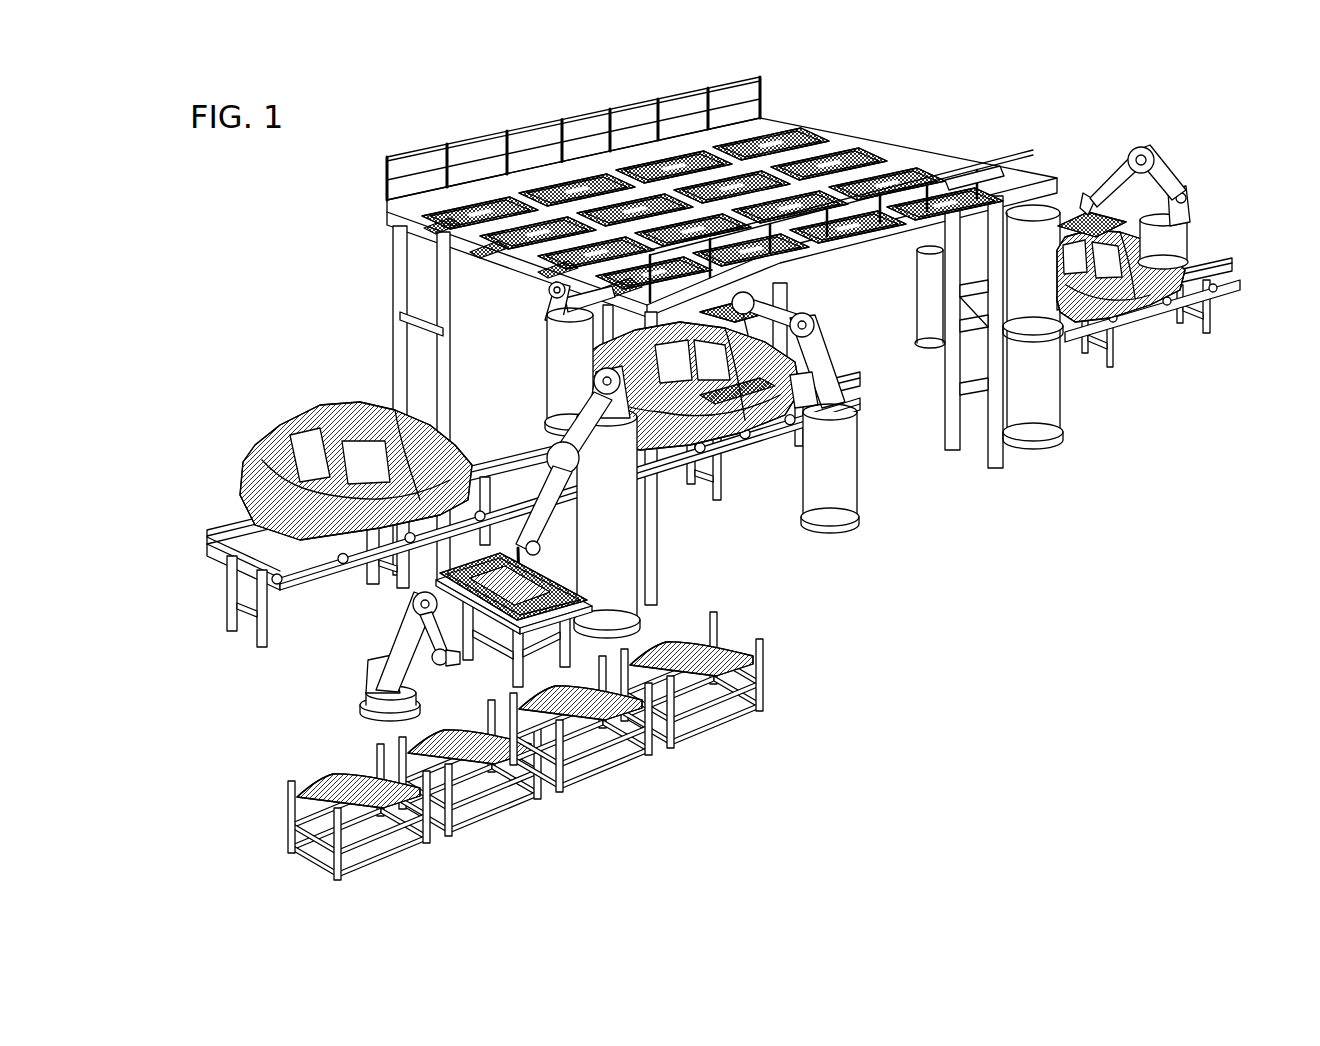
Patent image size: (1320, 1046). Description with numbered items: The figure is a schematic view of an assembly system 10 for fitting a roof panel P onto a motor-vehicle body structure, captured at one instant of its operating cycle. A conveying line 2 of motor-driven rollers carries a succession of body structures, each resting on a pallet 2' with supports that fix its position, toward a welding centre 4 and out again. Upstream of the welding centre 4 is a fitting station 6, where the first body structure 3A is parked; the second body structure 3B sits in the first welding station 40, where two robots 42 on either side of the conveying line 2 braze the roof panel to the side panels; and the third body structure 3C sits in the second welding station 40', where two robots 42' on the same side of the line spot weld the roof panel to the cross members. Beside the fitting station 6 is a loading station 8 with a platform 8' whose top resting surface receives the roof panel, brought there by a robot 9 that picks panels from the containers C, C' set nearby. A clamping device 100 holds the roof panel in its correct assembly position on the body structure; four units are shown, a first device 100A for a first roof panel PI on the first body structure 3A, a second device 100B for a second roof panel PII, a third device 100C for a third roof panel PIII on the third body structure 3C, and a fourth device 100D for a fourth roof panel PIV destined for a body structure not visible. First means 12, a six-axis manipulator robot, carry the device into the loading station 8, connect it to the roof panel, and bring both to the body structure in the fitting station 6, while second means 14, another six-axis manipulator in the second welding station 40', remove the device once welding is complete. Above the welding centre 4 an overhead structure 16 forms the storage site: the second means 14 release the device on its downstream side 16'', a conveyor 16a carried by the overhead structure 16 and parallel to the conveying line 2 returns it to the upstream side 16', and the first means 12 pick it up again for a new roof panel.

The assembly system 10 is at (268, 278).
The overhead structure 16 is at (681, 334).
The first side of overhead structure 16' is at (378, 399).
The opposite side of overhead structure 16'' is at (615, 137).
The conveyor 16a is at (953, 170).
The clamping device 100 is at (488, 194).
The first clamping device 100A is at (436, 566).
The second clamping device 100B is at (745, 392).
The third clamping device 100C is at (1078, 185).
The fourth clamping device 100D is at (800, 257).
The conveying line 2 is at (660, 478).
The pallet 2' is at (674, 478).
The first body structure 3A is at (262, 447).
The second body structure 3B is at (562, 352).
The third body structure 3C is at (1190, 268).
The welding centre 4 is at (1042, 498).
The fitting station 6 is at (290, 408).
The loading station 8 is at (525, 707).
The platform 8' is at (527, 622).
The robot 9 is at (390, 628).
The first means 12 is at (613, 497).
The second means 14 is at (1045, 386).
The first welding station 40 is at (712, 426).
The second welding station 40' is at (1156, 243).
The brazing robot 42 is at (689, 407).
The welding robot 42' is at (1146, 198).
The roof panel P is at (345, 780).
The first roof panel PI is at (480, 582).
The second roof panel PII is at (755, 306).
The third roof panel PIII is at (1068, 210).
The fourth roof panel PIV is at (580, 712).
The container C is at (525, 745).
The container C' is at (581, 737).